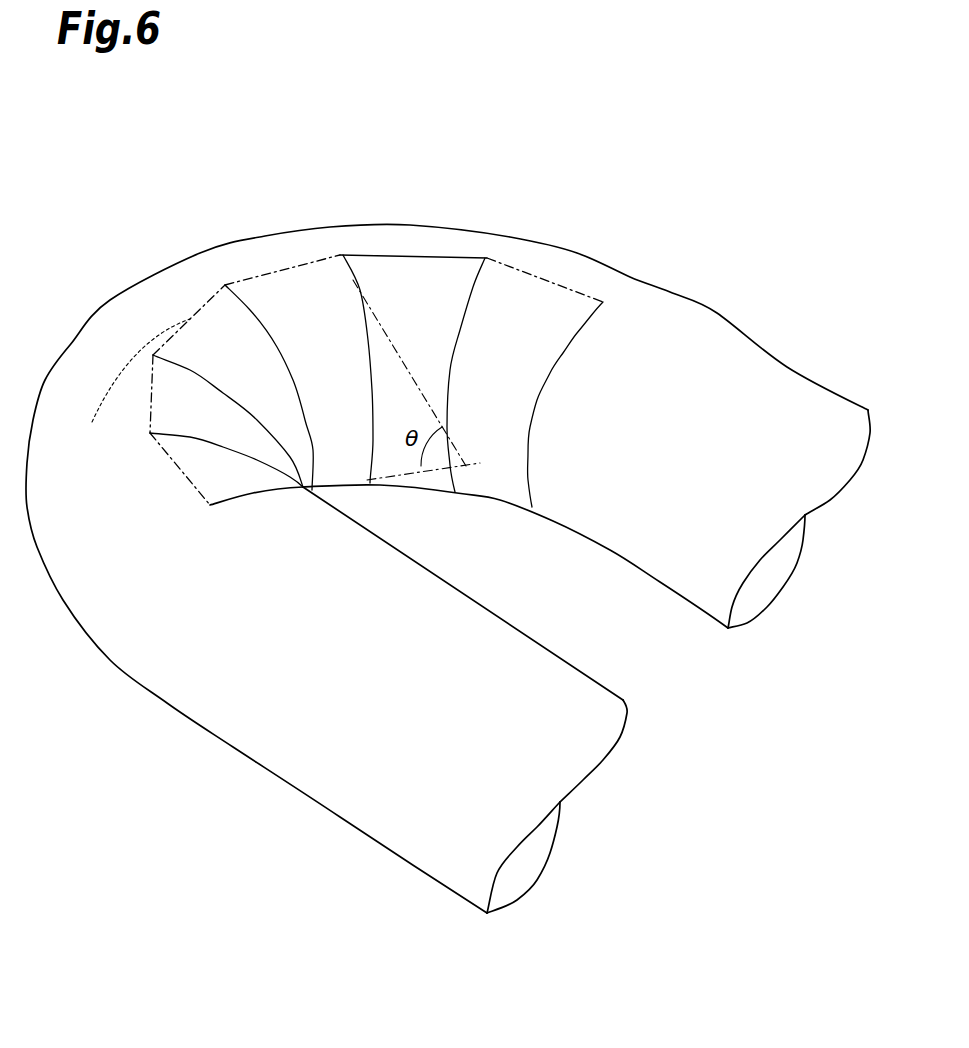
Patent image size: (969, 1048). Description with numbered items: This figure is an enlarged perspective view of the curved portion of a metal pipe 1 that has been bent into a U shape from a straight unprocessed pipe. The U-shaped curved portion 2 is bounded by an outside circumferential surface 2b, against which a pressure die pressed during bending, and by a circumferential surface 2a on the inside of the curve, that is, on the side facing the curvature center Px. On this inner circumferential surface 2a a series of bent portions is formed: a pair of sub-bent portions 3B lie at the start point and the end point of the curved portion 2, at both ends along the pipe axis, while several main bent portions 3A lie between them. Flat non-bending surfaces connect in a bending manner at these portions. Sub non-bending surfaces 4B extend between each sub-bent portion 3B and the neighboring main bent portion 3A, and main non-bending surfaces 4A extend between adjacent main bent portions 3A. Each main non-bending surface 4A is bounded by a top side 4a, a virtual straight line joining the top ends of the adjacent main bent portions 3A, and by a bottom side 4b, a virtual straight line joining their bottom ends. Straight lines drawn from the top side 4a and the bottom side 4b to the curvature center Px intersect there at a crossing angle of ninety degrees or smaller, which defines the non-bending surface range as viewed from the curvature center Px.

The pipe 1 is at (722, 310).
The curved portion 2 is at (407, 227).
The circumferential surface 2a is at (294, 290).
The outside circumferential surface 2b is at (126, 285).
The main bent portions 3A is at (255, 300).
The sub-bent portions 3B is at (577, 335).
The main non-bending surfaces 4A is at (207, 327).
The sub non-bending surfaces 4B is at (533, 293).
The top side 4a is at (150, 409).
The bottom side 4b is at (343, 487).
The curvature center Px is at (460, 466).